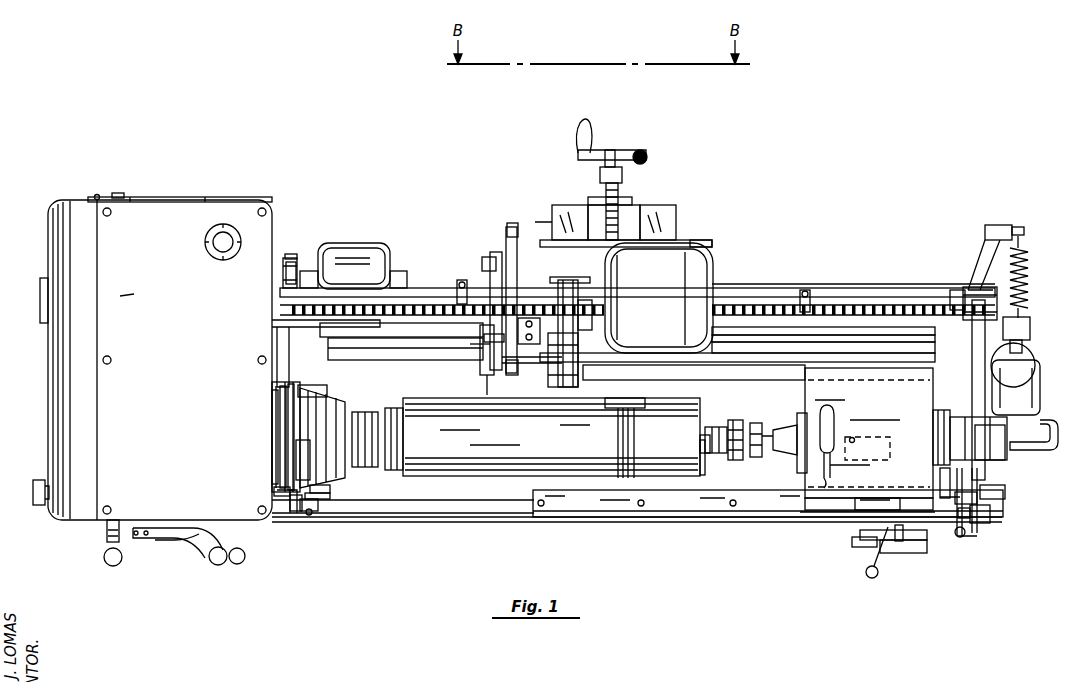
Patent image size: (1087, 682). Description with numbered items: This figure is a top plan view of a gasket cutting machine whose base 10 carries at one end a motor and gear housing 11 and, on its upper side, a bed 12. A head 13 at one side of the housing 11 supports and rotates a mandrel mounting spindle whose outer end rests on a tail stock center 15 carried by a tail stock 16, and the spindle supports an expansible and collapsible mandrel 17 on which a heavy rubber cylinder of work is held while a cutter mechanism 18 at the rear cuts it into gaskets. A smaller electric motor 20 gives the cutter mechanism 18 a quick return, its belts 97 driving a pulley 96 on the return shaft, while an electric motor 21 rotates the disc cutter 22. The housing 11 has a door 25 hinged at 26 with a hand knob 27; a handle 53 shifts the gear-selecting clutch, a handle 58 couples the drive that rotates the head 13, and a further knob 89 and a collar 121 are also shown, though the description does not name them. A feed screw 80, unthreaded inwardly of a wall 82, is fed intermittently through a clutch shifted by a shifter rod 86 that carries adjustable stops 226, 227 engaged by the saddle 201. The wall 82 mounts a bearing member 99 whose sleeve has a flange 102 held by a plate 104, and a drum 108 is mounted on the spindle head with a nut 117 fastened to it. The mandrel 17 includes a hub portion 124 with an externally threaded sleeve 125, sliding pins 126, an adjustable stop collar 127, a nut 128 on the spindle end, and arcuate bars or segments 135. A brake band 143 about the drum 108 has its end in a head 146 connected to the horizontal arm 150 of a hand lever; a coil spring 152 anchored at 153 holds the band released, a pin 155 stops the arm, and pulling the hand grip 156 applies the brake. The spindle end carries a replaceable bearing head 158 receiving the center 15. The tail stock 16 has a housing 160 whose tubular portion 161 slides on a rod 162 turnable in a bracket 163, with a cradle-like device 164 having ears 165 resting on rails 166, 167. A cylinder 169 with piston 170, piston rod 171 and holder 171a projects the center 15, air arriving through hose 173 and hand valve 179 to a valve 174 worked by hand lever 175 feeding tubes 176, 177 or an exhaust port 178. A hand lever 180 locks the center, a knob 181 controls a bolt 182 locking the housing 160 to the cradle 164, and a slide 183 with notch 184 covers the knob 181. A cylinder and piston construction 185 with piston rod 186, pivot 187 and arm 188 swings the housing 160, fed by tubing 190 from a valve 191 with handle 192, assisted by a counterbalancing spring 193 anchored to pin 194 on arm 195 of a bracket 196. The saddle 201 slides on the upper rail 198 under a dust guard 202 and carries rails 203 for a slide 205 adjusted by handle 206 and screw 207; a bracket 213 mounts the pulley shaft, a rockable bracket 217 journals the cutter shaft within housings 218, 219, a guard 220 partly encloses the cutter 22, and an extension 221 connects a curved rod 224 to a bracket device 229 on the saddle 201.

The base 10 is at (442, 526).
The motor and gear housing 11 is at (175, 195).
The bed 12 is at (484, 506).
The head 13 is at (352, 488).
The tail stock center 15 is at (756, 460).
The tail stock 16 is at (832, 515).
The mandrel 17 is at (516, 500).
The cutter mechanism 18 is at (702, 232).
The electric motor 20 is at (352, 243).
The electric motor 21 is at (710, 254).
The disc cutter 22 is at (470, 398).
The door 25 is at (48, 370).
The hinge 26 is at (97, 194).
The hand knob 27 is at (34, 479).
The handle 53 is at (238, 565).
The handle 58 is at (216, 566).
The feed screw 80 is at (408, 295).
The wall 82 is at (276, 236).
The shifter rod 86 is at (428, 312).
The control knob 89 is at (113, 567).
The pulley 96 is at (292, 271).
The belts 97 is at (290, 255).
The bearing member 99 is at (278, 428).
The flange 102 is at (283, 438).
The plate 104 is at (287, 422).
The drum 108 is at (328, 392).
The nut 117 is at (368, 469).
The collar 121 is at (391, 469).
The hub portion 124 is at (702, 442).
The externally threaded sleeve 125 is at (622, 386).
The pins 126 is at (711, 478).
The collar 127 is at (722, 464).
The nut 128 is at (738, 460).
The bars or segments 135 is at (635, 480).
The brake band 143 is at (284, 462).
The head 146 is at (320, 494).
The horizontal arm 150 is at (318, 500).
The coil spring 152 is at (303, 478).
The anchor 153 is at (276, 491).
The pin 155 is at (300, 512).
The hand grip 156 is at (313, 512).
The bearing head 158 is at (773, 455).
The housing 160 is at (812, 403).
The tubular portion 161 is at (845, 338).
The rod 162 is at (750, 289).
The bracket 163 is at (957, 290).
The cradle-like device 164 is at (826, 530).
The ears 165 is at (812, 345).
The rail 166 is at (678, 512).
The rail 167 is at (727, 373).
The cylinder 169 is at (985, 450).
The piston 170 is at (980, 460).
The piston rod 171 is at (879, 436).
The holder 171a is at (845, 430).
The flexible hose 173 is at (942, 481).
The valve 174 is at (905, 542).
The hand lever 175 is at (874, 579).
The tube 176 is at (958, 538).
The tube 177 is at (966, 533).
The exhaust port 178 is at (958, 500).
The hand valve 179 is at (967, 513).
The hand lever 180 is at (830, 507).
The knob 181 is at (860, 548).
The bolt 182 is at (867, 510).
The slide 183 is at (900, 555).
The notch 184 is at (890, 546).
The cylinder and piston construction 185 is at (1040, 393).
The piston rod 186 is at (1023, 346).
The pivot 187 is at (1032, 328).
The arm 188 is at (1036, 365).
The tubing 190 is at (1048, 452).
The valve 191 is at (985, 525).
The handle 192 is at (995, 500).
The counterbalancing spring 193 is at (1030, 272).
The pin 194 is at (1025, 231).
The arm 195 is at (998, 224).
The bracket 196 is at (997, 313).
The upper rail 198 is at (415, 330).
The saddle 201 is at (684, 200).
The dust or chip guard 202 is at (410, 362).
The rails 203 is at (572, 212).
The slide 205 is at (686, 237).
The handle 206 is at (585, 125).
The screw 207 is at (622, 190).
The bracket 213 is at (526, 317).
The bracket 217 is at (512, 367).
The housing 218 is at (567, 281).
The housing 219 is at (557, 387).
The guard 220 is at (486, 364).
The extension 221 is at (500, 340).
The curved rod 224 is at (510, 222).
The adjustable stop 226 is at (808, 288).
The adjustable stop 227 is at (463, 280).
The bracket device 229 is at (514, 222).